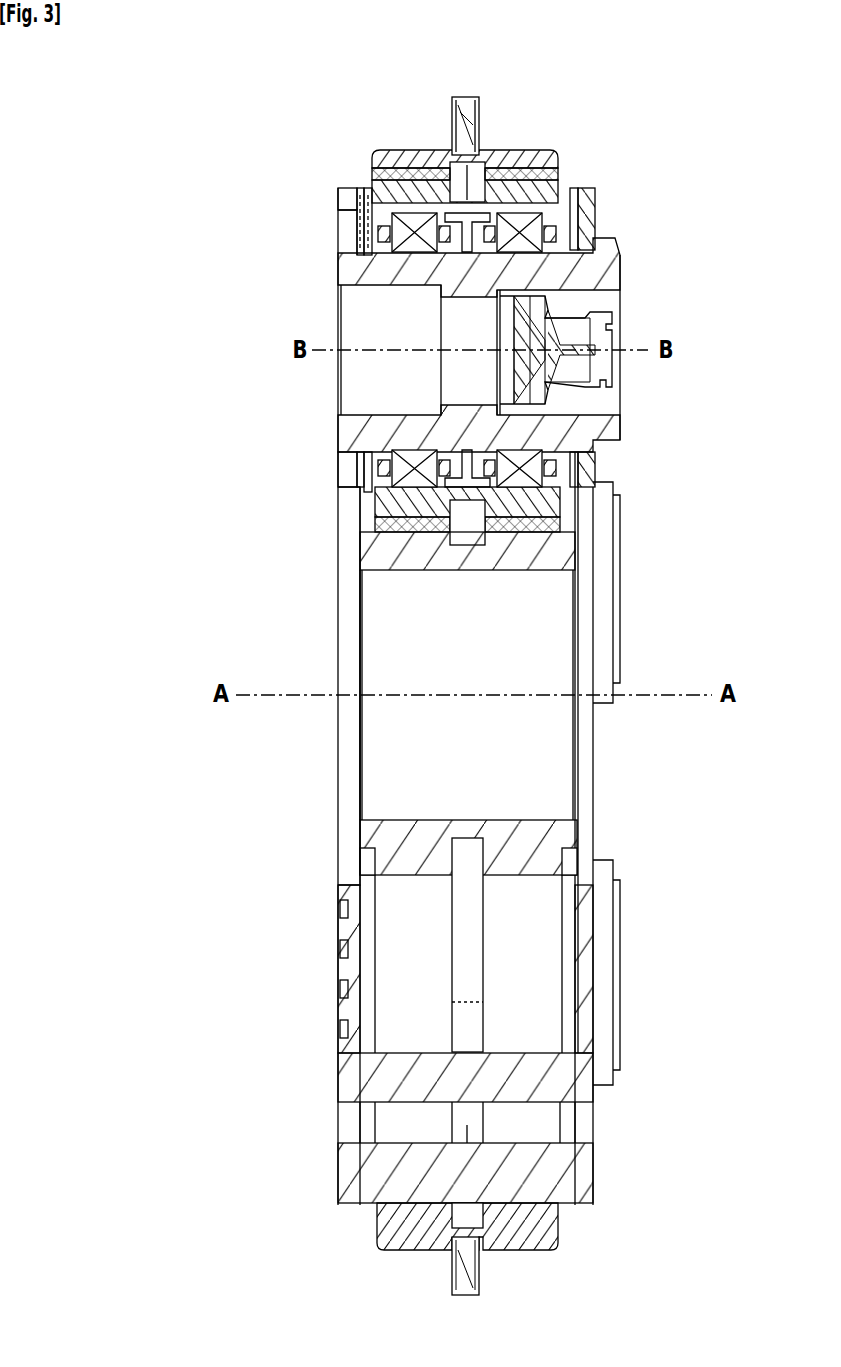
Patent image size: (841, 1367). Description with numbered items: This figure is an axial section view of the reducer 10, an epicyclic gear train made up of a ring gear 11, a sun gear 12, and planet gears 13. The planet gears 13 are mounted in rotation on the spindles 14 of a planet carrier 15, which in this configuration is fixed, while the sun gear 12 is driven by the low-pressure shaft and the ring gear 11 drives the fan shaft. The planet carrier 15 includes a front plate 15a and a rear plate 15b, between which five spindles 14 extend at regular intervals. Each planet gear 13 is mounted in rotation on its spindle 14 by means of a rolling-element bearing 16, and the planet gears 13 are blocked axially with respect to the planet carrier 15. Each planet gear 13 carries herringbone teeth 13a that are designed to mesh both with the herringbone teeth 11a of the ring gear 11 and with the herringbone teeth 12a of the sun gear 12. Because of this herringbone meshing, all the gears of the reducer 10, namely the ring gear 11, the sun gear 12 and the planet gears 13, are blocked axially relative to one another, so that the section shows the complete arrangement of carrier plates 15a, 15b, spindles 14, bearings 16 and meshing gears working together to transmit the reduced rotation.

The reducer 10 is at (652, 130).
The ring gear 11 is at (464, 147).
The herringbone teeth 11a is at (405, 162).
The sun gear 12 is at (472, 873).
The herringbone teeth 12a is at (374, 535).
The planet gear 13 is at (469, 329).
The herringbone teeth 13a is at (378, 525).
The spindle 14 is at (606, 270).
The planet carrier 15 is at (476, 318).
The front plate 15a is at (346, 200).
The rear plate 15b is at (585, 195).
The rolling-element bearing 16 is at (395, 240).